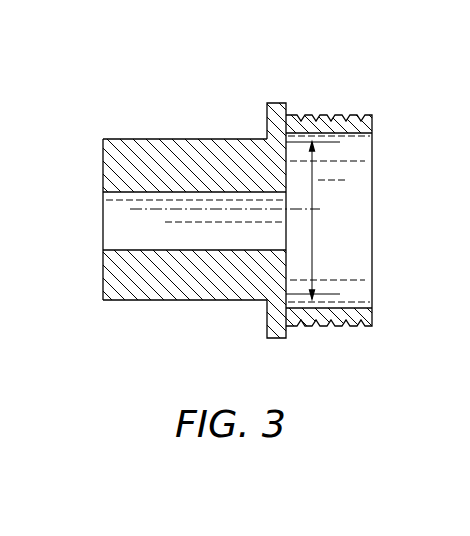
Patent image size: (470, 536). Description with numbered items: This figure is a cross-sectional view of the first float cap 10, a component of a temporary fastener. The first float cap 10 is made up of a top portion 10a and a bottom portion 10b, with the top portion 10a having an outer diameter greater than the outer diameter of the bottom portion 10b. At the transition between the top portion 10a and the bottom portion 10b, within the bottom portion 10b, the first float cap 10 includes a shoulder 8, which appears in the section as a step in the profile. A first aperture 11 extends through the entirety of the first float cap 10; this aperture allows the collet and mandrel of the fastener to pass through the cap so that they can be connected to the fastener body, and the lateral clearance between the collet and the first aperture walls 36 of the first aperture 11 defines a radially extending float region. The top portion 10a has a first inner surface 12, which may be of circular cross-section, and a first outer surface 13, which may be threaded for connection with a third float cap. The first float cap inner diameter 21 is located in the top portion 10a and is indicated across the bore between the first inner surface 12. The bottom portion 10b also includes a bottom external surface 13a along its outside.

The first float cap 10 is at (127, 112).
The top portion 10a is at (303, 83).
The bottom portion 10b is at (97, 311).
The shoulder 8 is at (267, 122).
The first aperture 11 is at (95, 227).
The first inner surface 12 is at (340, 142).
The first outer surface 13 is at (335, 113).
The bottom external surface 13a is at (138, 302).
The first float cap inner diameter 21 is at (315, 237).
The first aperture walls 36 is at (163, 250).